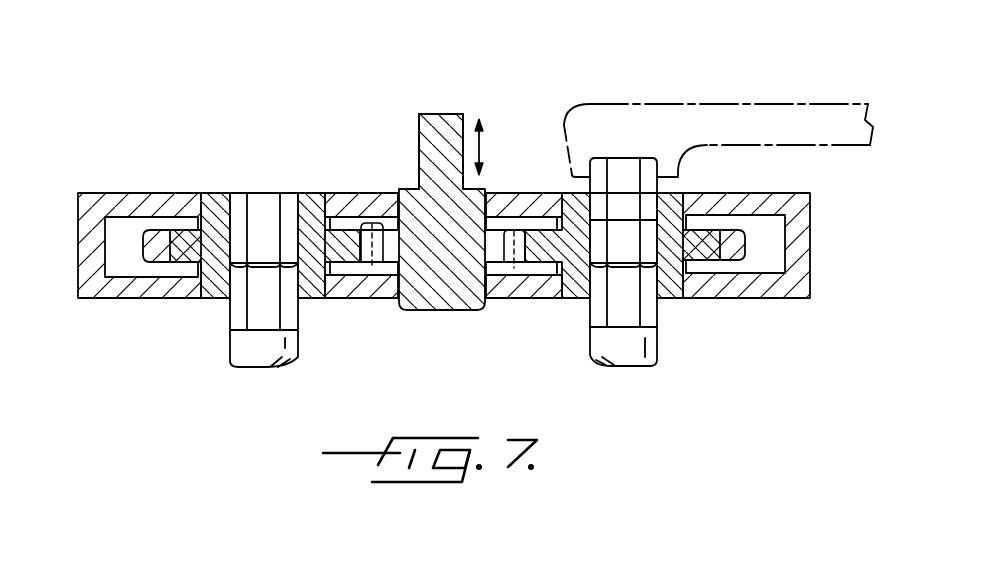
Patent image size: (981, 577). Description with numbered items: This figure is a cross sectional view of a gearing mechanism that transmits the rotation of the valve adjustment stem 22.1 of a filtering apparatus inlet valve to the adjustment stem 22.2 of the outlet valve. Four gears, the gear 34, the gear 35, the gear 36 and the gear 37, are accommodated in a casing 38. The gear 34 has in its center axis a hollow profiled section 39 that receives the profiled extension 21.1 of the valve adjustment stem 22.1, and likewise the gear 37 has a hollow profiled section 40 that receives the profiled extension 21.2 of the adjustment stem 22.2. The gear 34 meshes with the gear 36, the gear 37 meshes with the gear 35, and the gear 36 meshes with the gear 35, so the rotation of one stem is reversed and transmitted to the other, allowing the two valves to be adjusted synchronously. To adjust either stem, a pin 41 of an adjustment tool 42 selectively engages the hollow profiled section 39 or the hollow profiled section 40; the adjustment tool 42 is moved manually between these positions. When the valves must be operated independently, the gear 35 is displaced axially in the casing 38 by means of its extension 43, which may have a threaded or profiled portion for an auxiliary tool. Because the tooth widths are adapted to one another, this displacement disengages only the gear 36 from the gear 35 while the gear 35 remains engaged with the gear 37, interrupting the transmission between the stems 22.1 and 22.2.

The casing 38 is at (93, 195).
The gear 37 is at (213, 196).
The hollow profiled section 40 is at (268, 197).
The extension 43 is at (445, 130).
The gear 35 is at (408, 200).
The pin 41 is at (620, 167).
The adjustment tool 42 is at (788, 103).
The gear 34 is at (710, 228).
The profiled extension 21.2 is at (253, 307).
The adjustment stem 22.2 is at (241, 358).
The gear 36 is at (388, 263).
The profiled extension 21.1 is at (598, 317).
The valve adjustment stem 22.1 is at (618, 350).
The hollow profiled section 39 is at (650, 253).